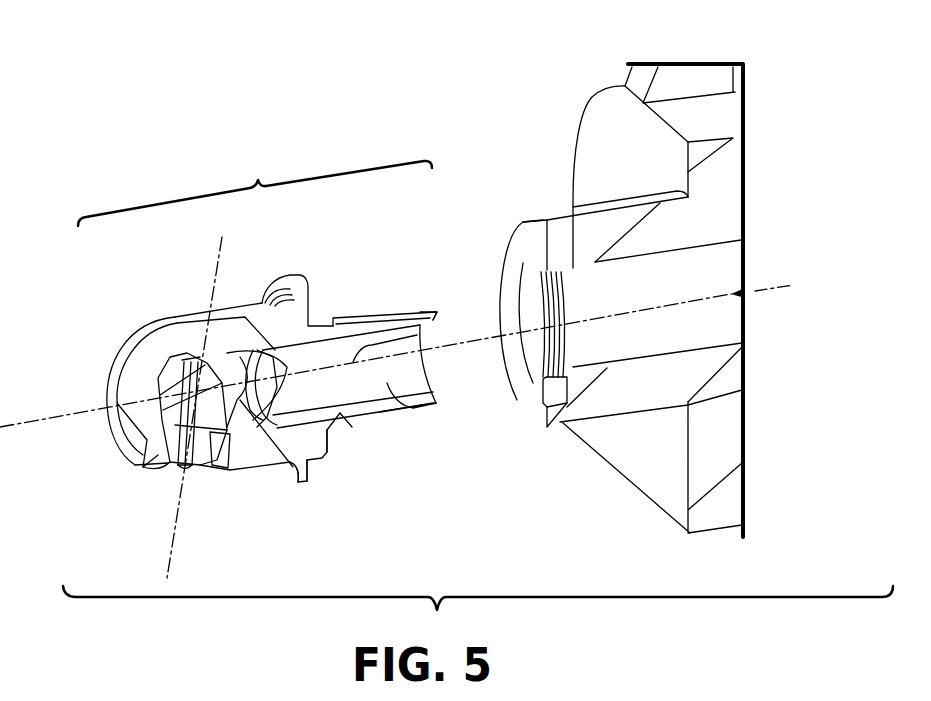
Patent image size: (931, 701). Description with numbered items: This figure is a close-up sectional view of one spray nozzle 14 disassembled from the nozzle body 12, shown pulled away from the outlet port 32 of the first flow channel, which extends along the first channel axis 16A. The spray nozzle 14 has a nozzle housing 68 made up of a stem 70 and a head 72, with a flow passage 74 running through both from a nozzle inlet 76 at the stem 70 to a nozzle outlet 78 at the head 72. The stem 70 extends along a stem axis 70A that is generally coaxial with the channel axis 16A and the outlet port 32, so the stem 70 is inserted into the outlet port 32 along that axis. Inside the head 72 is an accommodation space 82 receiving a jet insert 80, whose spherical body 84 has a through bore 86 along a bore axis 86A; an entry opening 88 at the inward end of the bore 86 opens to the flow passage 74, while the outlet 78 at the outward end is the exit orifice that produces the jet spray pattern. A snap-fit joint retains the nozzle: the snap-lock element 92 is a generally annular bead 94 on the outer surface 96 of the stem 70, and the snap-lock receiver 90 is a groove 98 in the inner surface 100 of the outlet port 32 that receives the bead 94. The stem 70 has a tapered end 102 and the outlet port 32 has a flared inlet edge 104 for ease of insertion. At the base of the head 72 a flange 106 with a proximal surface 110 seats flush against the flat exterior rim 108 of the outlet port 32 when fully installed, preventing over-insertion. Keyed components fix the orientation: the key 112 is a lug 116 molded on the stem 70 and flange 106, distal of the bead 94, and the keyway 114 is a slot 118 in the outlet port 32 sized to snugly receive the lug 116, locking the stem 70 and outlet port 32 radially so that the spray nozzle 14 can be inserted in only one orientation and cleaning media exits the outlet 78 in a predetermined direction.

The nozzle body 12 is at (580, 88).
The spray nozzle 14 is at (96, 322).
The first channel axis 16A is at (650, 310).
The outlet port 32 is at (622, 415).
The nozzle housing 68 is at (255, 186).
The stem 70 is at (375, 312).
The stem axis 70A is at (459, 317).
The head 72 is at (150, 335).
The flow passage 74 is at (422, 405).
The nozzle inlet 76 is at (422, 368).
The nozzle outlet 78 is at (173, 468).
The jet insert 80 is at (147, 412).
The accommodation space 82 is at (160, 457).
The spherical body 84 is at (155, 392).
The through bore 86 is at (242, 427).
The bore axis 86A is at (180, 503).
The entry opening 88 is at (186, 360).
The snap-lock receiver 90 is at (572, 245).
The snap-lock element 92 is at (334, 296).
The bead 94 is at (352, 427).
The outer surface 96 is at (390, 415).
The groove 98 is at (577, 362).
The inner surface 100 is at (632, 258).
The tapered end 102 is at (435, 307).
The flared inlet edge 104 is at (532, 277).
The flange 106 is at (285, 467).
The flat exterior rim 108 is at (533, 241).
The proximal surface 110 is at (330, 300).
The key 112 is at (316, 472).
The keyway 114 is at (528, 408).
The lug 116 is at (333, 433).
The slot 118 is at (590, 422).